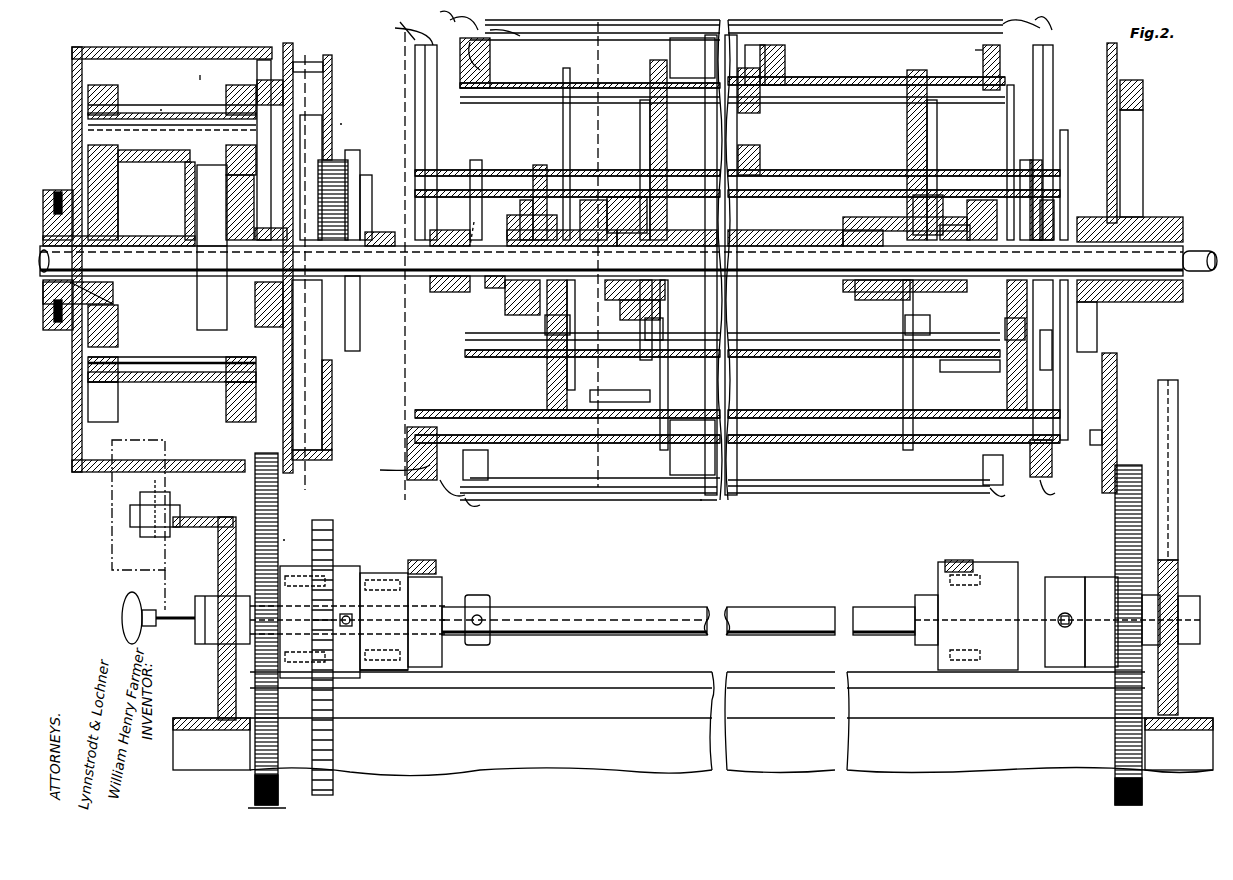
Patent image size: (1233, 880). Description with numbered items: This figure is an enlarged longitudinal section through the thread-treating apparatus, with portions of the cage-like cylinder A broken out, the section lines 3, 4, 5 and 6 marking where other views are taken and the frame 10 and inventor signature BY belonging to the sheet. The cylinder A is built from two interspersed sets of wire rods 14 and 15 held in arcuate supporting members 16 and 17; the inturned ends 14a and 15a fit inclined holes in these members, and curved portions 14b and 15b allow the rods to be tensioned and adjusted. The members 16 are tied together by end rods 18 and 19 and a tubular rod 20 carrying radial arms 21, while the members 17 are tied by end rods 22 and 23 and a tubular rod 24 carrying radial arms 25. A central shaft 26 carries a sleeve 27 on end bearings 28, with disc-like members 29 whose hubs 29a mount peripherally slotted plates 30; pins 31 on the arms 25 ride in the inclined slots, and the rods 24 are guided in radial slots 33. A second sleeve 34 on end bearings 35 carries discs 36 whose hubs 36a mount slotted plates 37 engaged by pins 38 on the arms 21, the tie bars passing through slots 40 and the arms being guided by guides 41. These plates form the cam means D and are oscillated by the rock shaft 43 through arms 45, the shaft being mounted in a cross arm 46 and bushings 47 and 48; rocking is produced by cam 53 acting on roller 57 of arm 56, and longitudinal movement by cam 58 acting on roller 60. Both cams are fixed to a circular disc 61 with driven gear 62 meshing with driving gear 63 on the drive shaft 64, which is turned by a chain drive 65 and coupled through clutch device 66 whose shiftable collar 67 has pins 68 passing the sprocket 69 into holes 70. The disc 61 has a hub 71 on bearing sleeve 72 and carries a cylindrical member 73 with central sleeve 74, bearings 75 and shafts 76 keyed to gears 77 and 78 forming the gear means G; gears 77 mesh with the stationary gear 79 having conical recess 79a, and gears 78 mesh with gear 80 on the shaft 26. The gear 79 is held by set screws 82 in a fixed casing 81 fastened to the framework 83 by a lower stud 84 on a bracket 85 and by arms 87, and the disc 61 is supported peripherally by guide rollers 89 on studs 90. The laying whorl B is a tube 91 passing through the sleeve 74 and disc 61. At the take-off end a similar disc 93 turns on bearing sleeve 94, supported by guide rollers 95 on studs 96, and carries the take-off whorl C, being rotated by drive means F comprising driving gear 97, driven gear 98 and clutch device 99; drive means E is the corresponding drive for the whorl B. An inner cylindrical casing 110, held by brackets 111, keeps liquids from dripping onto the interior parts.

The section line 3 is at (200, 75).
The section line 4 is at (305, 55).
The section line 5 is at (405, 32).
The section line 6 is at (598, 22).
The frame 10 is at (970, 51).
The rods 14 is at (830, 30).
The inturned ends of rods 14a is at (478, 66).
The curved portions 14b is at (752, 275).
The rods 15 is at (632, 268).
The inturned ends of rods 15a is at (393, 254).
The curved portions 15b is at (714, 255).
The arcuate supporting members 16 is at (490, 58).
The arcuate supporting members 17 is at (415, 56).
The end rod 18 is at (548, 83).
The end rod 19 is at (946, 90).
The tubular rod 20 is at (698, 118).
The radial arms 21 is at (640, 136).
The end rod 22 is at (522, 170).
The end rod 23 is at (1068, 170).
The tubular rod 24 is at (702, 170).
The radial arms 25 is at (540, 165).
The shaft 26 is at (420, 300).
The sleeve 27 is at (695, 225).
The end bearings 28 is at (1084, 218).
The disc-like members 29 is at (568, 105).
The hub 29a is at (482, 200).
The peripherally slotted plate 30 is at (530, 200).
The pins 31 is at (547, 370).
The radial slots 33 is at (572, 362).
The sleeve 34 is at (828, 248).
The end bearings 35 is at (592, 200).
The disc-like members 36 is at (660, 388).
The hub 36a is at (605, 295).
The peripherally slotted plate 37 is at (795, 381).
The pins 38 is at (626, 197).
The slots 40 is at (650, 124).
The guides 41 is at (570, 322).
The rock shaft 43 is at (386, 232).
The arms 45 is at (650, 262).
The cross arm 46 is at (456, 230).
The bushings 47 is at (557, 225).
The bushings 48 is at (678, 230).
The rotating cam 53 is at (352, 351).
The arm 56 is at (372, 190).
The cam roller 57 is at (350, 150).
The rotating cam 58 is at (332, 84).
The cam roller 60 is at (312, 150).
The circular disc 61 is at (290, 36).
The driven gear 62 is at (264, 60).
The driving gear 63 is at (267, 630).
The drive shaft 64 is at (540, 607).
The chain drive 65 is at (333, 746).
The clutch device 66 is at (405, 577).
The shiftable collar 67 is at (398, 670).
The pins 68 is at (368, 573).
The sprocket 69 is at (360, 573).
The holes 70 is at (280, 580).
The central hub 71 is at (264, 228).
The bearing sleeve 72 is at (269, 304).
The cylindrical member 73 is at (170, 162).
The central sleeve 74 is at (128, 236).
The bearings 75 is at (192, 113).
The shafts 76 is at (128, 125).
The gears 77 is at (108, 85).
The gears 78 is at (240, 85).
The gear 79 is at (118, 188).
The conical recess 79a is at (113, 300).
The gear 80 is at (222, 216).
The fixed casing 81 is at (97, 47).
The set screws 82 is at (58, 192).
The framework 83 is at (210, 718).
The lower stud 84 is at (170, 500).
The bracket 85 is at (180, 527).
The arms 87 is at (165, 576).
The guide rollers 89 is at (298, 362).
The studs 90 is at (322, 405).
The tube 91 is at (50, 190).
The circular disc 93 is at (1117, 60).
The bearing sleeve 94 is at (1088, 324).
The guide rollers 95 is at (1102, 365).
The studs 96 is at (1090, 438).
The driving gear 97 is at (1115, 558).
The driven gear 98 is at (1143, 90).
The clutch device 99 is at (1057, 612).
The inner cylindrical casing 110 is at (612, 40).
The brackets 111 is at (660, 468).
The cage-like cylinder A is at (695, 514).
The whorl B is at (476, 225).
The whorl C is at (1200, 248).
The cam means D is at (345, 117).
The drive means E is at (289, 531).
The drive means F is at (1151, 575).
The gear means G is at (166, 100).
The by BY is at (97, 510).